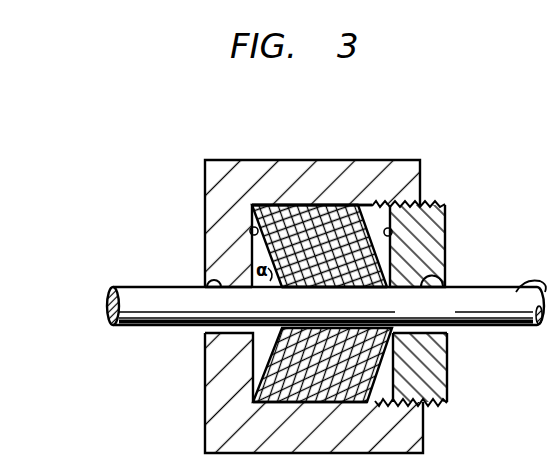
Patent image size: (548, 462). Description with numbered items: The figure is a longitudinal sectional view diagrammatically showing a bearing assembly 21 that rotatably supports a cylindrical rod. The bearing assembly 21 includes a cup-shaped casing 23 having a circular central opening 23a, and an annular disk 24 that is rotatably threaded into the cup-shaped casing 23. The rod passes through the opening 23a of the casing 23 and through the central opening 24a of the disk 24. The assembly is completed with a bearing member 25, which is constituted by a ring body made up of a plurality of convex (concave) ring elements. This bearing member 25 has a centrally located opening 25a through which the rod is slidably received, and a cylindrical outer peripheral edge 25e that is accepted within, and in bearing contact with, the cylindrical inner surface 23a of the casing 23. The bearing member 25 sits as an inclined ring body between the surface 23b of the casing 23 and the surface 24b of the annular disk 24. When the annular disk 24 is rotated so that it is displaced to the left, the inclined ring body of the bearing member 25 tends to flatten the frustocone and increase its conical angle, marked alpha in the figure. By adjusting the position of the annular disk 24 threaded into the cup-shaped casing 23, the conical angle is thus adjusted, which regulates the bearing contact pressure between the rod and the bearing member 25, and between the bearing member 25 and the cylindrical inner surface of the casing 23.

The bearing assembly 21 is at (466, 201).
The cup-shaped casing 23 is at (390, 163).
The circular central opening 23a is at (320, 207).
The surface of the casing 23b is at (252, 231).
The annular disk 24 is at (437, 252).
The central opening of the disk 24a is at (443, 272).
The surface of the annular disk 24b is at (392, 232).
The bearing member 25 is at (340, 212).
The centrally located opening 25a is at (347, 288).
The cylindrical outer peripheral edge 25e is at (290, 206).